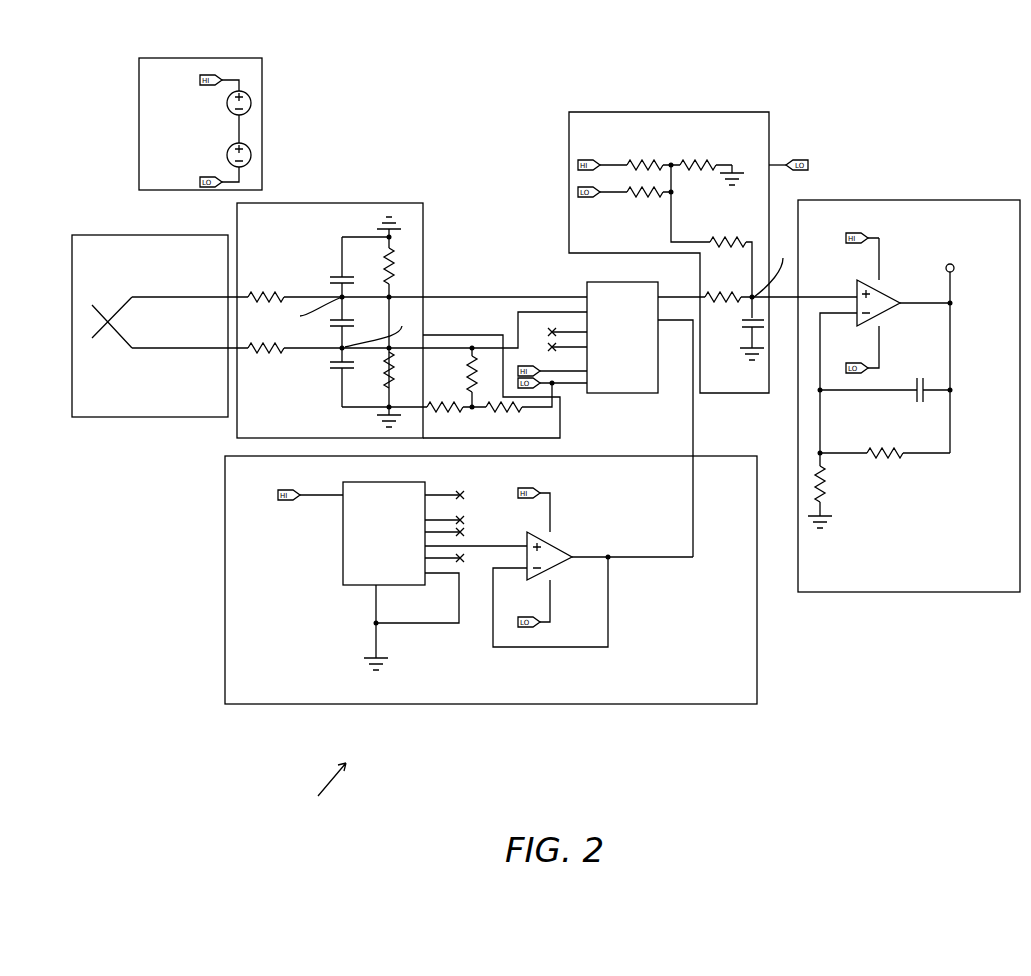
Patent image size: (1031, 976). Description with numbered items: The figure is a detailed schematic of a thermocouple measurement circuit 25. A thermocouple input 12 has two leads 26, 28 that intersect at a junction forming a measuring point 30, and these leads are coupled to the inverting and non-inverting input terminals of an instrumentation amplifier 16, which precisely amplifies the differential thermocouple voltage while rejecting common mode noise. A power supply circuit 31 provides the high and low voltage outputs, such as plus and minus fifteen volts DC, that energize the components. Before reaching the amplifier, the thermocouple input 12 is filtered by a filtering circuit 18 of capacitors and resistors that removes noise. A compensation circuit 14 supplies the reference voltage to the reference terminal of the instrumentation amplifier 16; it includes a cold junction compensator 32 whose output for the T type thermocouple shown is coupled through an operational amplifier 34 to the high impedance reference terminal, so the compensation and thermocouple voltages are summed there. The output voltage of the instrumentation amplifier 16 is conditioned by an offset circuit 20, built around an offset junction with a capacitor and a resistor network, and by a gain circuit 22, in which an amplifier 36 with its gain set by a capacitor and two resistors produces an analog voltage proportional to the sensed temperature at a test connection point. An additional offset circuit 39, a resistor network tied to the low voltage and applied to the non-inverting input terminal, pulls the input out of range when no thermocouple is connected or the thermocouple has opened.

The thermocouple input 12 is at (159, 296).
The compensation circuit 14 is at (519, 580).
The instrumentation amplifier 16 is at (645, 393).
The filtering circuit 18 is at (336, 203).
The offset circuit 20 is at (612, 112).
The gain circuit 22 is at (909, 366).
The thermocouple measurement circuit 25 is at (317, 792).
The lead 26 is at (157, 297).
The lead 28 is at (156, 348).
The measuring point 30 is at (110, 318).
The power supply circuit 31 is at (262, 70).
The cold junction compensator 32 is at (343, 568).
The operational amplifier 34 is at (557, 568).
The amplifier 36 is at (893, 293).
The additional offset circuit 39 is at (562, 420).